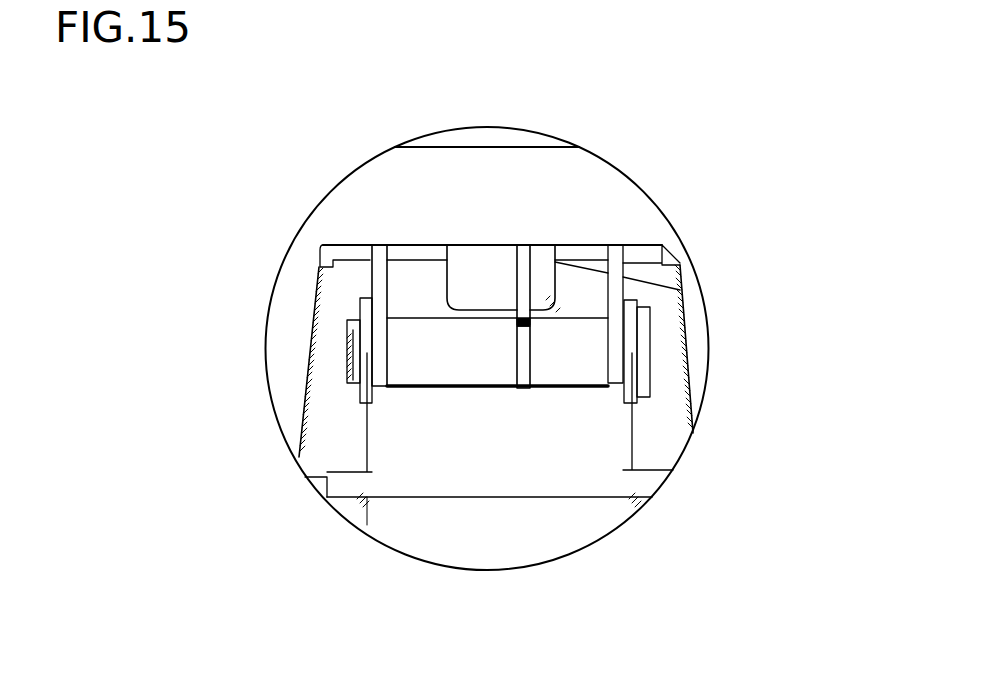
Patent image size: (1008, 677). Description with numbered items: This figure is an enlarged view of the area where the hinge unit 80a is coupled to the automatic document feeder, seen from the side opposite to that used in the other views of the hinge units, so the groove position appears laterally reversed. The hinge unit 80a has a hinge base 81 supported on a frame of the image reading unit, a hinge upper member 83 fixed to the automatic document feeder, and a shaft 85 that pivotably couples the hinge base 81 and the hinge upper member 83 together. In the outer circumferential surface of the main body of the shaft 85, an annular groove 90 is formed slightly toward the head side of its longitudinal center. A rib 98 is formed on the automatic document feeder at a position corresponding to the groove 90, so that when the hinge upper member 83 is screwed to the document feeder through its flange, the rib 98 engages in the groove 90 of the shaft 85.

The hinge unit 80a is at (767, 238).
The hinge base 81 is at (603, 514).
The hinge upper member 83 is at (367, 285).
The shaft 85 is at (407, 360).
The groove 90 is at (520, 367).
The rib 98 is at (518, 322).